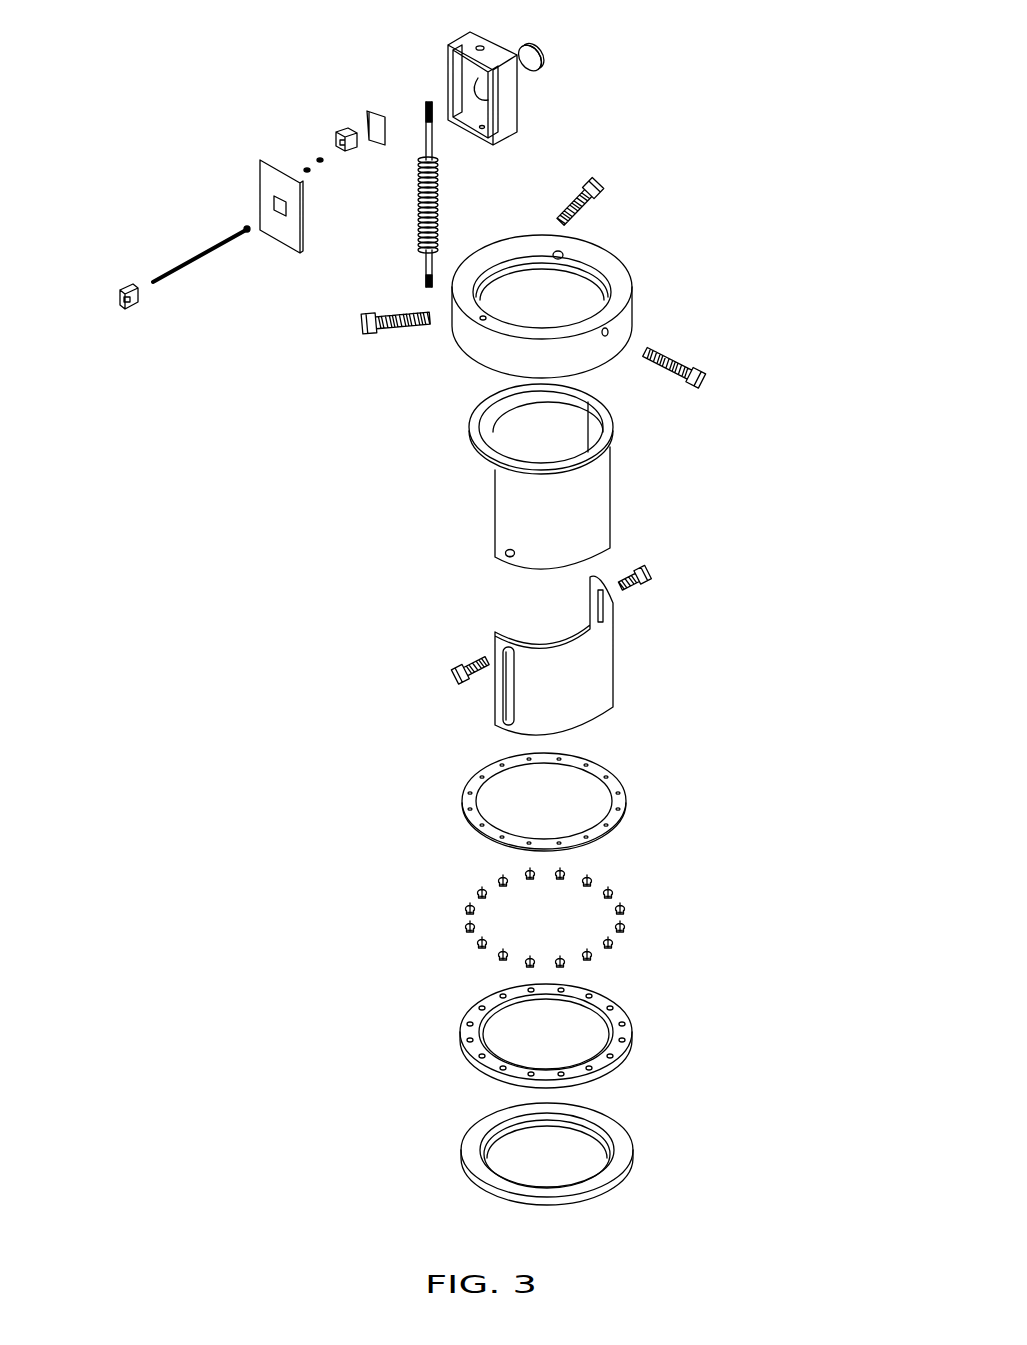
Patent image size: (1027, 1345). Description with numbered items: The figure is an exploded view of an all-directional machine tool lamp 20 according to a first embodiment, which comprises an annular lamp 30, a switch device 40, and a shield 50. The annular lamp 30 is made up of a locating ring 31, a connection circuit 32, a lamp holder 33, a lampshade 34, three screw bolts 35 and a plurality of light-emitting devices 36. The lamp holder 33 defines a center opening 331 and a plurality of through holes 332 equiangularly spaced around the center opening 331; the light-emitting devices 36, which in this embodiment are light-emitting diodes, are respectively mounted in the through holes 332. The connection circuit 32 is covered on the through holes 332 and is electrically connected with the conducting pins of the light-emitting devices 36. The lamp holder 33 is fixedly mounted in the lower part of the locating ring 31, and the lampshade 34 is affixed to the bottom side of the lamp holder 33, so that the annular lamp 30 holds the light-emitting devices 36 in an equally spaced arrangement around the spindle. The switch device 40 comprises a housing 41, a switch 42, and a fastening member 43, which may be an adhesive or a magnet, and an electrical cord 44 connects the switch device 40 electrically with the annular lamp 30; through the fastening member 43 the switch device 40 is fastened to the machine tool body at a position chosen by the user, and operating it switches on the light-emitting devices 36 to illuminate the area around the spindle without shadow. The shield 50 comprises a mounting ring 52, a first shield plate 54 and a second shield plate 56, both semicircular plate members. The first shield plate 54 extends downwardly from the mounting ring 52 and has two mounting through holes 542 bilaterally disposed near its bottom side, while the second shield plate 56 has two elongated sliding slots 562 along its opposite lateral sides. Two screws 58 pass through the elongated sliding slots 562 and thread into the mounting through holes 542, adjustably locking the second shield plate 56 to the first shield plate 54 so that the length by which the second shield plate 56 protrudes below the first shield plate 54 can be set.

The all-directional machine tool lamp 20 is at (642, 77).
The annular lamp 30 is at (692, 855).
The locating ring 31 is at (633, 305).
The connection circuit 32 is at (625, 790).
The lamp holder 33 is at (628, 1058).
The center opening 331 is at (498, 1025).
The through holes 332 is at (612, 1003).
The lampshade 34 is at (634, 1153).
The screw bolts 35 is at (582, 208).
The light-emitting devices 36 is at (625, 913).
The switch device 40 is at (296, 127).
The housing 41 is at (463, 42).
The switch 42 is at (347, 127).
The fastening member 43 is at (535, 45).
The electrical cord 44 is at (418, 212).
The shield 50 is at (650, 500).
The mounting ring 52 is at (470, 437).
The first shield plate 54 is at (495, 490).
The mounting through holes 542 is at (505, 557).
The second shield plate 56 is at (615, 658).
The elongated sliding slots 562 is at (505, 687).
The screws 58 is at (463, 665).